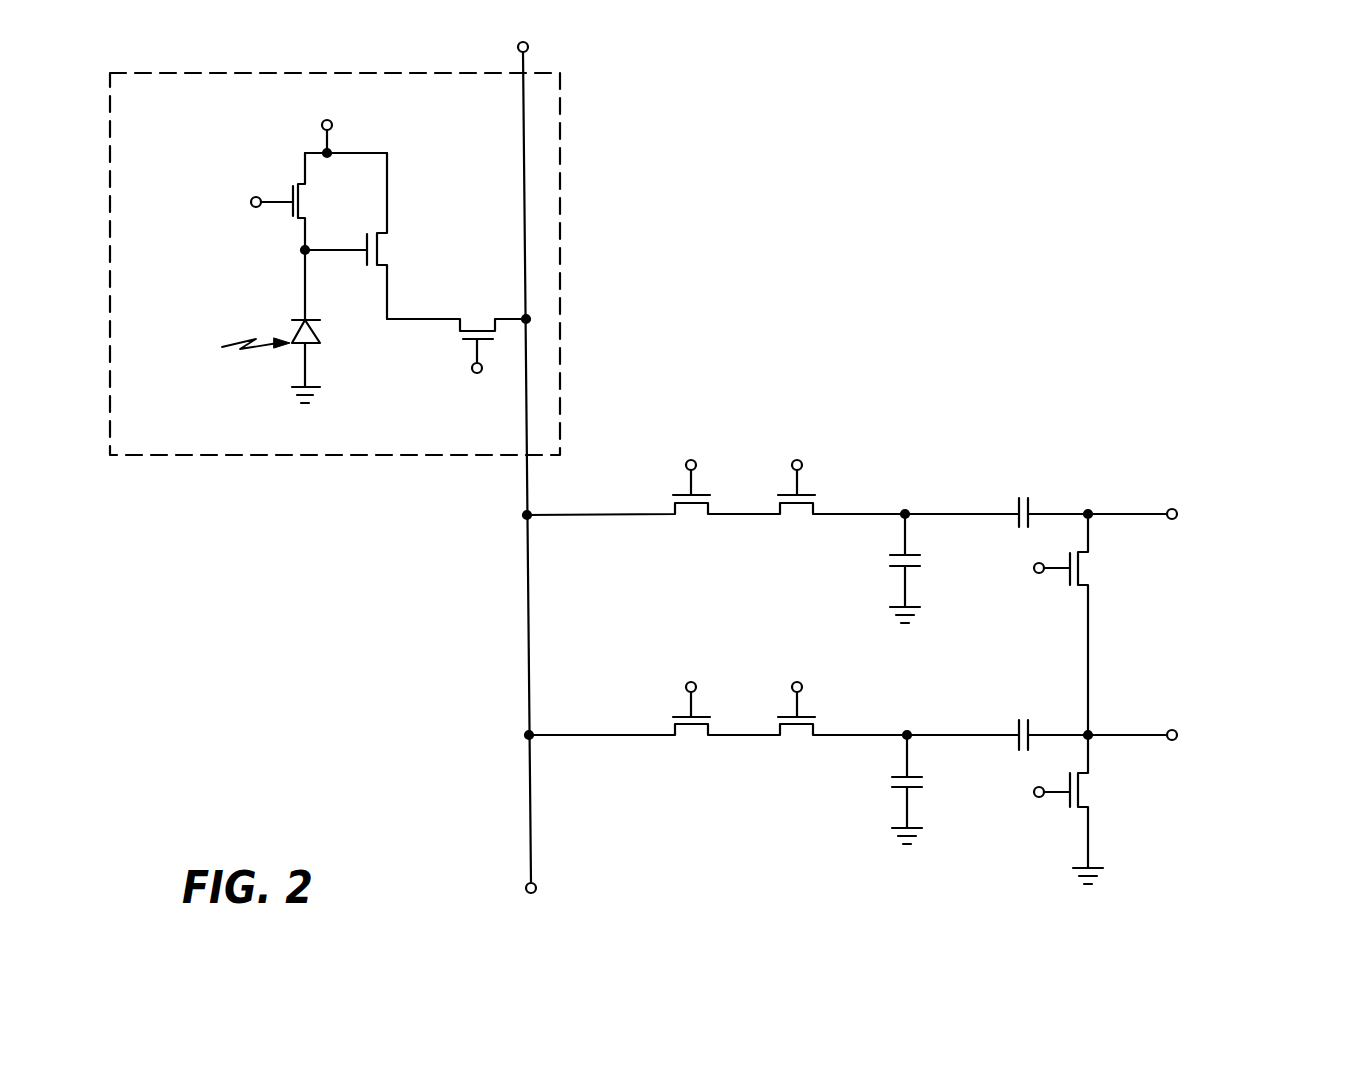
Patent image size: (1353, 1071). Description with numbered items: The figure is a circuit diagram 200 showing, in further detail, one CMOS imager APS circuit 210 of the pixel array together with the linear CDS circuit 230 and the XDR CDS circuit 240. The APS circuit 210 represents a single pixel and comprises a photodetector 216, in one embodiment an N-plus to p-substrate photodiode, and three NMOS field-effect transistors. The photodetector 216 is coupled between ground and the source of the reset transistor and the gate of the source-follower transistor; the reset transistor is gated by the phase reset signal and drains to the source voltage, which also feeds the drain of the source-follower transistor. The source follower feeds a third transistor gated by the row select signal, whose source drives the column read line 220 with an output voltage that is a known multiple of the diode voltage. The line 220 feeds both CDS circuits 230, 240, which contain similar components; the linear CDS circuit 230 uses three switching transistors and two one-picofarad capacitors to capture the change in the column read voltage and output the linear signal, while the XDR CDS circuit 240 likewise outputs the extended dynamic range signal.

The circuit diagram 200 is at (918, 158).
The APS circuit 210 is at (560, 130).
The photodetector 216 is at (318, 334).
The column read line 220 is at (528, 487).
The linear CDS circuit 230 is at (1085, 488).
The XDR CDS circuit 240 is at (1106, 721).